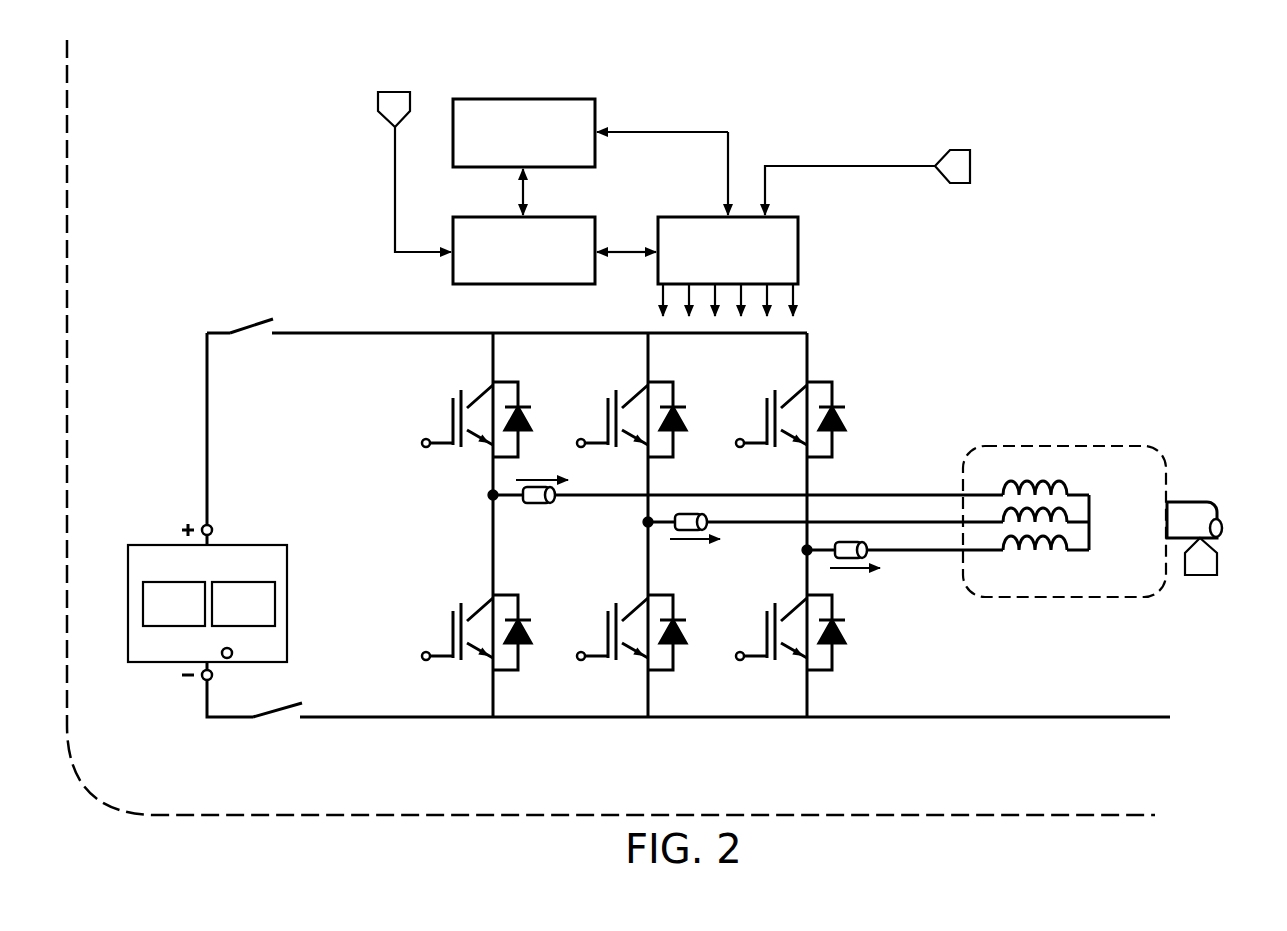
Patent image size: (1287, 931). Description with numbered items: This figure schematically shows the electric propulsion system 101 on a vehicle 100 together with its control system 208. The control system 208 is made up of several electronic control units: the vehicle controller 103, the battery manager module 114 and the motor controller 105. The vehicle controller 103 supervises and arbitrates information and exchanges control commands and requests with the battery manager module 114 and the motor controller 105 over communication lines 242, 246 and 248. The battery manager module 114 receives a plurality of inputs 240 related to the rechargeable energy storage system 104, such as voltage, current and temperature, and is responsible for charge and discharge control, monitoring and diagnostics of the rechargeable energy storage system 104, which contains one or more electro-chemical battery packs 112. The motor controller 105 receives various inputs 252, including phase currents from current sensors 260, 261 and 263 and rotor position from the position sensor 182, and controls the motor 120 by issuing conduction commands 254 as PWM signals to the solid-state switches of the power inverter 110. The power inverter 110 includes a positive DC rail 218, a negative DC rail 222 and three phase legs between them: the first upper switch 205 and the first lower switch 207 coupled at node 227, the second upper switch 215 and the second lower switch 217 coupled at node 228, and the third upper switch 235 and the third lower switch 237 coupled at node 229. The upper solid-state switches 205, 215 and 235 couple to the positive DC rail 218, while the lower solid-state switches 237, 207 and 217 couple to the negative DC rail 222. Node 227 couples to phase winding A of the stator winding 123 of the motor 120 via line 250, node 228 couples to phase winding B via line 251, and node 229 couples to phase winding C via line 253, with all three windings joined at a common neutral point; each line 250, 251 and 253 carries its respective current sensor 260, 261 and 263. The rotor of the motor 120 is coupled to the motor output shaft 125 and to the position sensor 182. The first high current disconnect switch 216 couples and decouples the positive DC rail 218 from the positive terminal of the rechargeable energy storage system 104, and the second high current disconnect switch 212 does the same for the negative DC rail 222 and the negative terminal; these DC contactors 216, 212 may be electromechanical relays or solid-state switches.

The vehicle 100 is at (244, 128).
The electric propulsion system 101 is at (1035, 187).
The vehicle controller 103 is at (506, 144).
The rechargeable energy storage system 104 is at (171, 545).
The motor controller 105 is at (710, 263).
The power inverter 110 is at (875, 345).
The electro-chemical battery packs 112 is at (158, 615).
The battery manager module 114 is at (506, 263).
The AC motor 120 is at (1050, 417).
The stator winding 123 is at (1084, 477).
The motor output shaft 125 is at (1196, 486).
The position sensor 182 is at (1200, 576).
The solid-state switch S1 205 is at (466, 376).
The solid-state switch S4 207 is at (470, 673).
The control system 208 is at (744, 78).
The high current disconnect switch SW2 212 is at (279, 697).
The solid-state switch S3 215 is at (621, 376).
The high current disconnect switch SW1 216 is at (271, 309).
The solid-state switch S6 217 is at (625, 672).
The positive DC rail 218 is at (477, 320).
The negative DC rail 222 is at (372, 717).
The node (phase pole A) 227 is at (485, 503).
The node (phase pole B) 228 is at (643, 530).
The node (phase pole C) 229 is at (800, 558).
The solid-state switch S5 235 is at (781, 378).
The solid-state switch S2 237 is at (780, 672).
The inputs 240 is at (376, 96).
The communication line 242 is at (523, 198).
The communication line 246 is at (616, 252).
The communication line 248 is at (635, 132).
The line 250 is at (605, 493).
The line 251 is at (884, 522).
The inputs 252 is at (958, 150).
The line 253 is at (937, 551).
The conduction commands 254 is at (803, 297).
The current sensor 260 is at (534, 504).
The current sensor 261 is at (703, 514).
The current sensor 263 is at (860, 541).